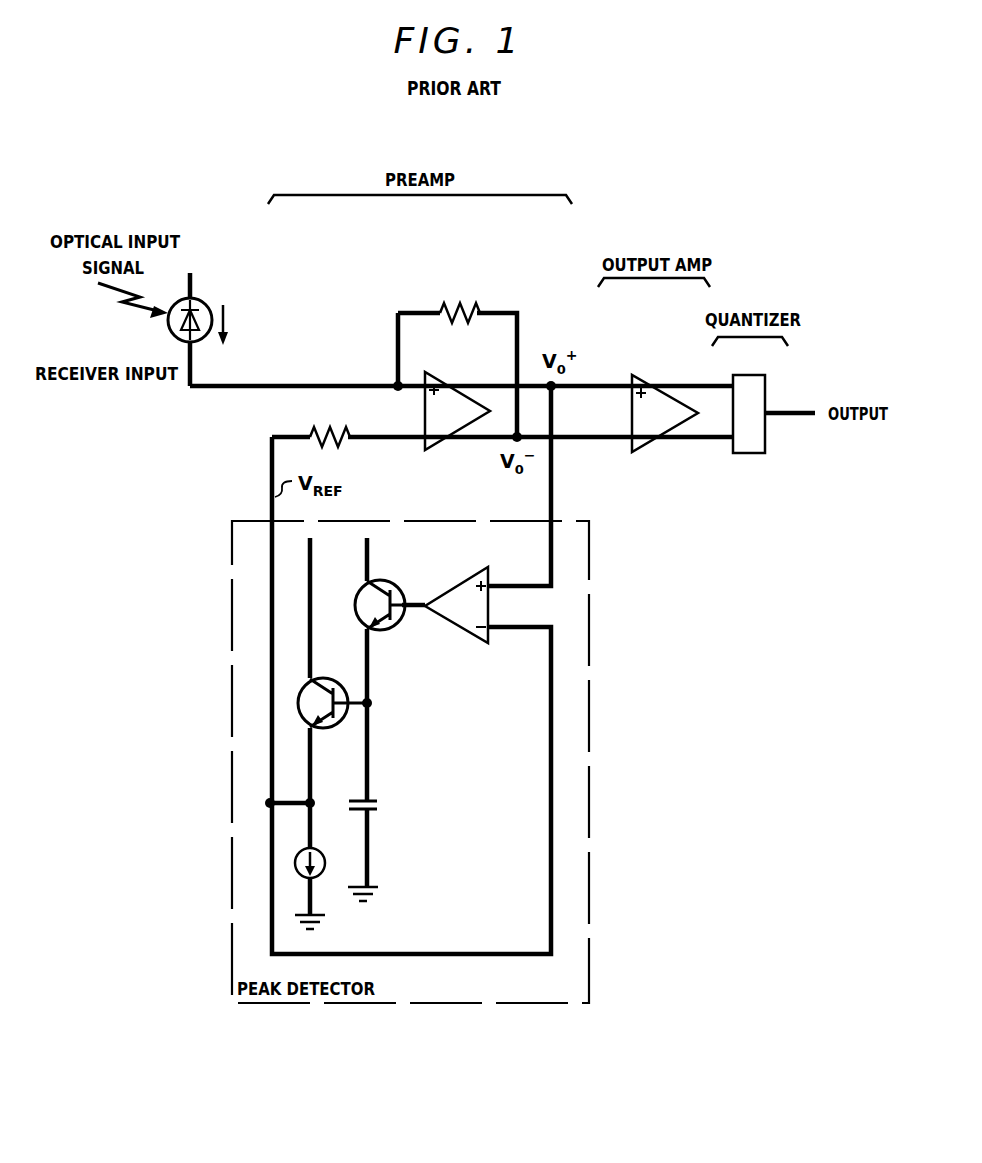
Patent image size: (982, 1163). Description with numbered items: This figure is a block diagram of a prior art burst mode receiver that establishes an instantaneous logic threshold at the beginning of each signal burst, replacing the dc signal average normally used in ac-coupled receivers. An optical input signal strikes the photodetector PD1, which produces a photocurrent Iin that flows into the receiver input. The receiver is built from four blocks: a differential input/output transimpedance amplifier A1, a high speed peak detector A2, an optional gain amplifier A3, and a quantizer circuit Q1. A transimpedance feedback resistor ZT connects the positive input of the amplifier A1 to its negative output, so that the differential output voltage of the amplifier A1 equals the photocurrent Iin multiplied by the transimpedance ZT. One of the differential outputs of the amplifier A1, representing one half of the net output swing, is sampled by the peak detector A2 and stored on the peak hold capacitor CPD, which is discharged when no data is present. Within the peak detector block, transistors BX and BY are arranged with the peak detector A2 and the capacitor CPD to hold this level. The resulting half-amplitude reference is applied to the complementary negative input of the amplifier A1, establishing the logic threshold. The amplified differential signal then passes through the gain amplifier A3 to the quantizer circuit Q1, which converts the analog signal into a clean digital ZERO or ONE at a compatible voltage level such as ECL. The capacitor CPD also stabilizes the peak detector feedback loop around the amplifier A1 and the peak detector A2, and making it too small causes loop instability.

The photodetector PD1 is at (208, 300).
The photocurrent Iin is at (234, 325).
The transimpedance feedback resistor ZT is at (413, 360).
The differential input/output transimpedance amplifier A1 is at (457, 411).
The high speed peak detector A2 is at (456, 605).
The optional gain amplifier A3 is at (665, 413).
The quantizer circuit Q1 is at (749, 414).
The transistor BX is at (369, 592).
The transistor BY is at (322, 692).
The peak hold capacitor CPD is at (385, 807).